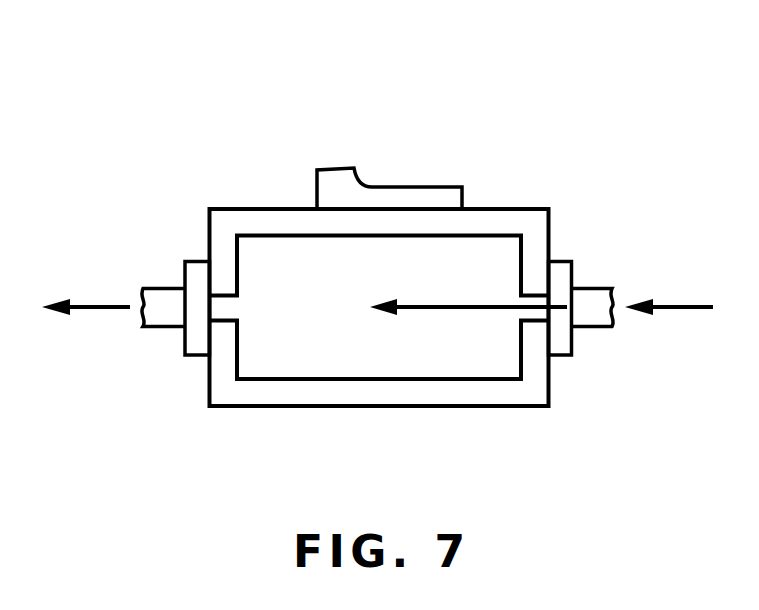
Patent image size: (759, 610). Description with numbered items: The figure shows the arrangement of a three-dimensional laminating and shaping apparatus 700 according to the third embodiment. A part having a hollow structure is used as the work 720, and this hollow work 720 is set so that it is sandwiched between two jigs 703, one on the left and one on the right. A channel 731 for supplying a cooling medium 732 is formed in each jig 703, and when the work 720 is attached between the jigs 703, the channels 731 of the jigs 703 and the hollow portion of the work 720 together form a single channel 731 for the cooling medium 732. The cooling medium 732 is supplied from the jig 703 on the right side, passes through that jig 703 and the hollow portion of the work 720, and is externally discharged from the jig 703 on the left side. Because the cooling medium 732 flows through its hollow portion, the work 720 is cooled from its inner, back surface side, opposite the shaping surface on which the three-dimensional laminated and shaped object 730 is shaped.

The three-dimensional laminating and shaping apparatus 700 is at (152, 100).
The jig 703 is at (185, 260).
The work 720 is at (518, 207).
The three-dimensional laminated and shaped object 730 is at (391, 186).
The channel 731 is at (593, 318).
The cooling medium 732 is at (682, 307).